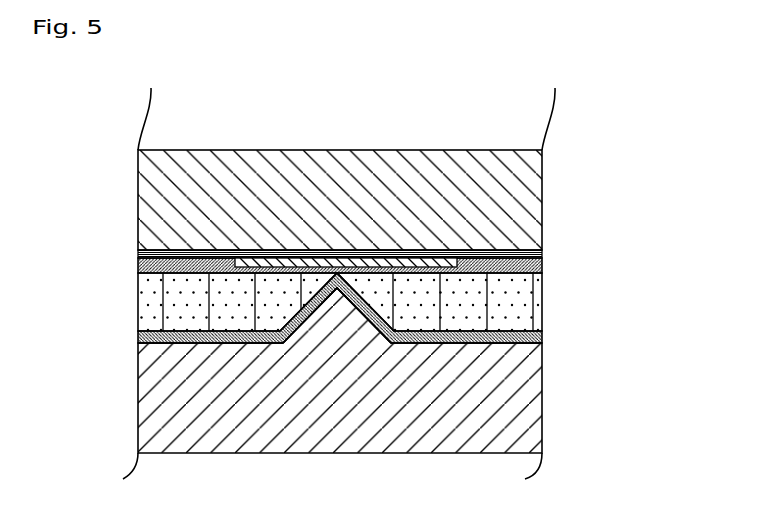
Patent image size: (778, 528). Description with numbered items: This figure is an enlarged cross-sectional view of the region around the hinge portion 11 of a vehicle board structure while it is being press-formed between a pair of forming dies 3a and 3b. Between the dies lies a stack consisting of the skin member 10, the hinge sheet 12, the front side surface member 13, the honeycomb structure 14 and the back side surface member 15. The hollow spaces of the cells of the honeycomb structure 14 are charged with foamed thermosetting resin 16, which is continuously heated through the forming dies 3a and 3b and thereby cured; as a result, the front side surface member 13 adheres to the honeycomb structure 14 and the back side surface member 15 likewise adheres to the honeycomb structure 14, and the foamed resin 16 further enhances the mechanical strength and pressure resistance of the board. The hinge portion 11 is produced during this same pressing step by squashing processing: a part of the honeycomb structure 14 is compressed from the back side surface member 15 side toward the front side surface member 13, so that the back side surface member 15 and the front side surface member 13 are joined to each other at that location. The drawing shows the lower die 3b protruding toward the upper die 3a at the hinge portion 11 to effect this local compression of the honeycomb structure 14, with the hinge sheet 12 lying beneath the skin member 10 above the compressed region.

The forming die 3a is at (502, 168).
The forming die 3b is at (507, 421).
The skin member 10 is at (543, 256).
The hinge portion 11 is at (340, 296).
The hinge sheet 12 is at (427, 251).
The front side surface member 13 is at (543, 267).
The honeycomb structure 14 is at (543, 322).
The back side surface member 15 is at (518, 345).
The thermosetting resin 16 is at (507, 305).